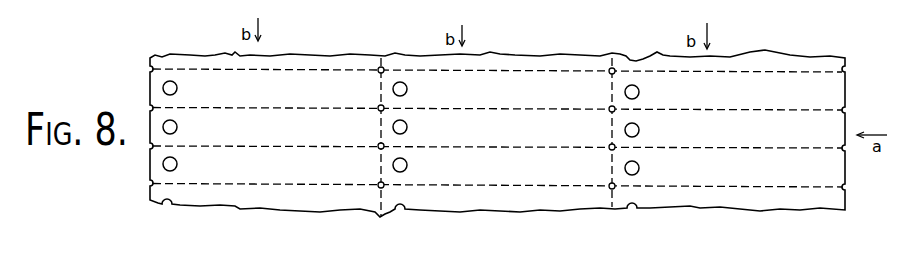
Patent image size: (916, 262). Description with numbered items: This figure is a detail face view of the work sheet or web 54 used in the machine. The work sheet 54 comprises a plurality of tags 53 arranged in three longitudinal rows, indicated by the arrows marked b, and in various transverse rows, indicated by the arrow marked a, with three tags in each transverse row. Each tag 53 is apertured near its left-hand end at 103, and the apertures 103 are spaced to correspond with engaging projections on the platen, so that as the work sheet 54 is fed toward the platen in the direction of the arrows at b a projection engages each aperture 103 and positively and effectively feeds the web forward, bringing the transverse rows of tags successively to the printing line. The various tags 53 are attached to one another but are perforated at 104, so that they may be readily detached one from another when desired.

The tag 53 is at (497, 128).
The work sheet or web 54 is at (150, 80).
The aperture 103 is at (163, 89).
The perforation 104 is at (378, 129).